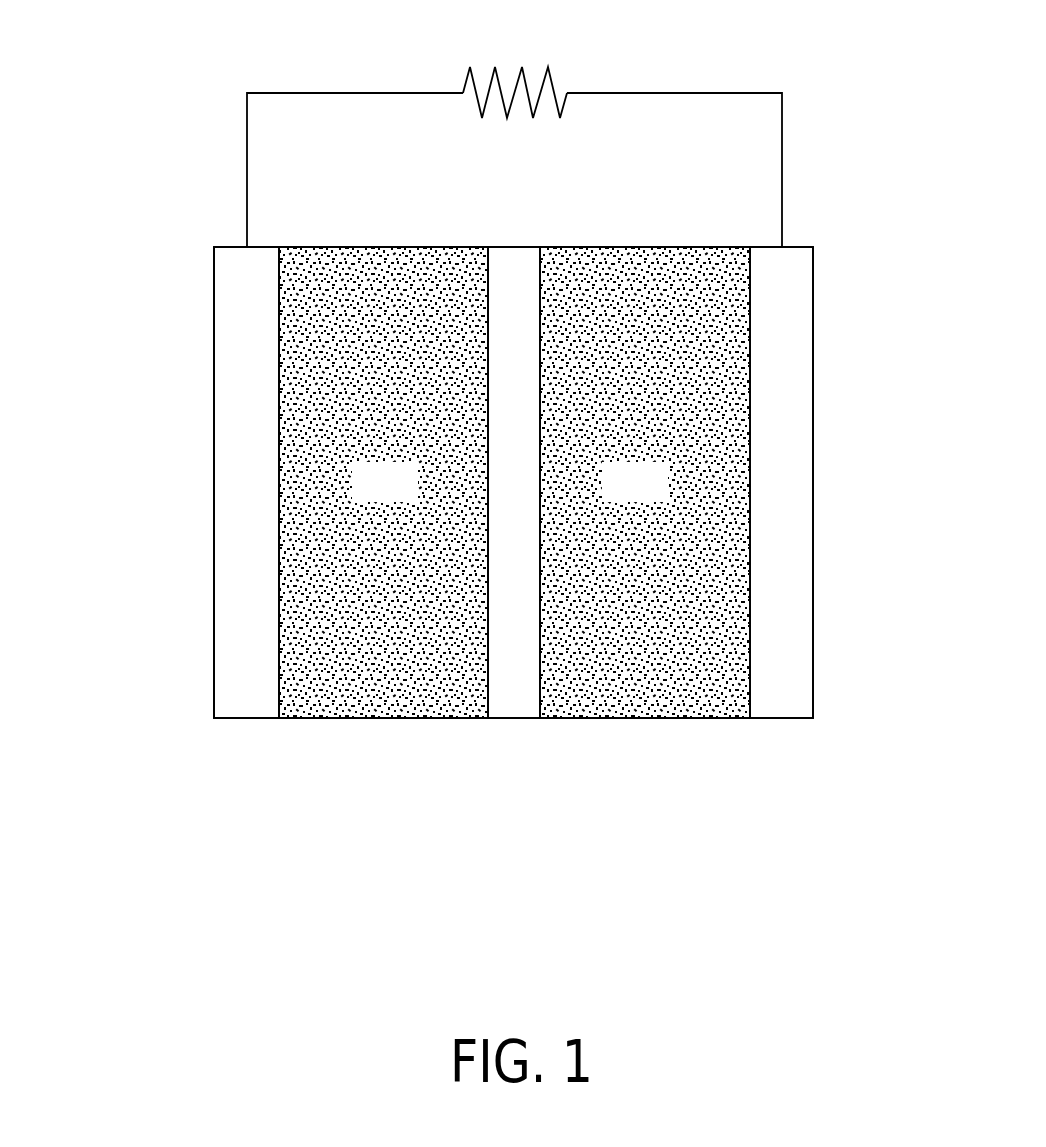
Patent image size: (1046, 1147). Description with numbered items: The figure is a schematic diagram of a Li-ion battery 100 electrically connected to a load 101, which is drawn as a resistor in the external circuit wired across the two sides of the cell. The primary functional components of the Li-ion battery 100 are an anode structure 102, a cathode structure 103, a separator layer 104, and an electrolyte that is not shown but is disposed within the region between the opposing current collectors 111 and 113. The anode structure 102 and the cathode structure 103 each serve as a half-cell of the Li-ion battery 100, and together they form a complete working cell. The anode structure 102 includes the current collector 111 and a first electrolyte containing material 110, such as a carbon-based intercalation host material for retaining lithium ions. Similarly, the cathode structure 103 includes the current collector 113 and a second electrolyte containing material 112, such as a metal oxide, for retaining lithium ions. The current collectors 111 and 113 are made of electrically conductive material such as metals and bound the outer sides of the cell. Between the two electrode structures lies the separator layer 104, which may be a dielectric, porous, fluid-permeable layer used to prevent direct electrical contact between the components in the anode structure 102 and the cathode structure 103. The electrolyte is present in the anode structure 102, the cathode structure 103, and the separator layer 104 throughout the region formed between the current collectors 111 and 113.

The Li-ion battery 100 is at (188, 172).
The load 101 is at (553, 82).
The anode structure 102 is at (292, 586).
The cathode structure 103 is at (738, 586).
The separator layer 104 is at (513, 248).
The first electrolyte containing material 110 is at (413, 497).
The current collector 111 is at (243, 498).
The second electrolyte containing material 112 is at (663, 497).
The current collector 113 is at (783, 498).